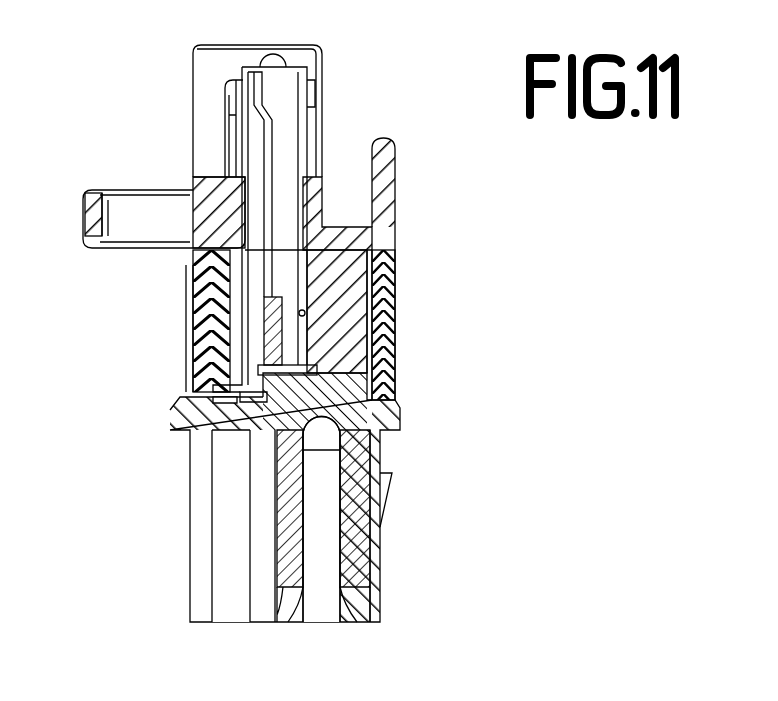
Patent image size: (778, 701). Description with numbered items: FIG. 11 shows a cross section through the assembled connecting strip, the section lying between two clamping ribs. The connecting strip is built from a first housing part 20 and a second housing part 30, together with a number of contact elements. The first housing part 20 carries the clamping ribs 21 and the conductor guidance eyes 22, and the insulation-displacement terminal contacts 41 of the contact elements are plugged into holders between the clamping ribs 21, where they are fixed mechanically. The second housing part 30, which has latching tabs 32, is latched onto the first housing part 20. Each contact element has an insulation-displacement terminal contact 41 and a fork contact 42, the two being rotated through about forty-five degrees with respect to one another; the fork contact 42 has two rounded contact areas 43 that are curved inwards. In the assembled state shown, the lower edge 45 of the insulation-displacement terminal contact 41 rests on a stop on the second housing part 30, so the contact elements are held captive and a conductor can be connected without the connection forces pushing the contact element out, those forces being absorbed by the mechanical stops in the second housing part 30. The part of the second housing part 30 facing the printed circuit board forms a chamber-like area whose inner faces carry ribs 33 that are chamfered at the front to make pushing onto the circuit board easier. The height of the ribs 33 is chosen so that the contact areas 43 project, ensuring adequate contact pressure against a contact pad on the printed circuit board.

The first housing part 20 is at (385, 149).
The clamping ribs 21 is at (207, 64).
The conductor guidance eyes 22 is at (80, 198).
The second housing part 30 is at (200, 565).
The latching tabs 32 is at (391, 480).
The ribs 33 is at (353, 603).
The insulation-displacement terminal contact 41 is at (256, 136).
The fork contact 42 is at (288, 620).
The contact areas 43 is at (337, 561).
The lower edge 45 is at (188, 394).